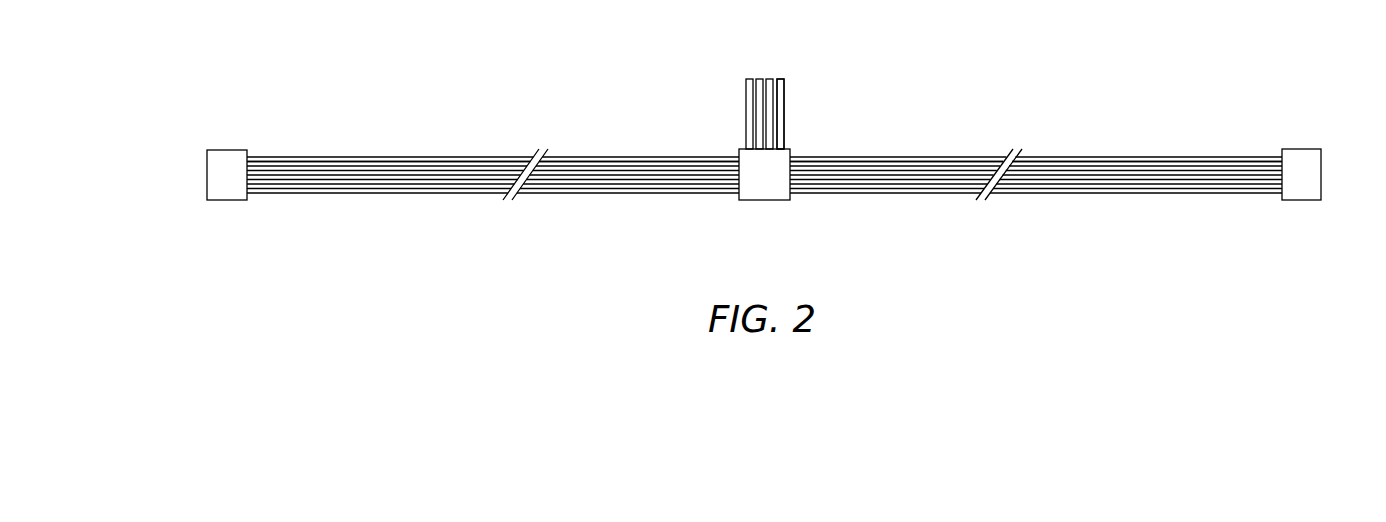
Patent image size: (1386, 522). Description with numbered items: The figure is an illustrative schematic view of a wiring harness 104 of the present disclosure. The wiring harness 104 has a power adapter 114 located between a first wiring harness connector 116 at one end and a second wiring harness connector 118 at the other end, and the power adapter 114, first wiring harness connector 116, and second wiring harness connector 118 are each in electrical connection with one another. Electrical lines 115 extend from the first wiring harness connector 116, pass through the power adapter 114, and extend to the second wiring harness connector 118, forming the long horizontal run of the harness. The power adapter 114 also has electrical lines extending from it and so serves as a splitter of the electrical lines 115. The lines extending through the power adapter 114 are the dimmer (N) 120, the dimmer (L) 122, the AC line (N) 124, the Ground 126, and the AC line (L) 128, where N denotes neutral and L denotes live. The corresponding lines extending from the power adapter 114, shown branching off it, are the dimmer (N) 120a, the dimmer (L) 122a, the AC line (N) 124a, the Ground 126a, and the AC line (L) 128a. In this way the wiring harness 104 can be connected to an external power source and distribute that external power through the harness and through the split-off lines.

The wiring harness 104 is at (1122, 187).
The power adapter 114 is at (780, 200).
The electrical lines 115 is at (558, 187).
The first wiring harness connector 116 is at (1297, 149).
The second wiring harness connector 118 is at (230, 150).
The dimmer (N) 120 is at (433, 193).
The dimmer (L) 122 is at (357, 187).
The AC line (N) 124 is at (462, 170).
The Ground 126 is at (412, 163).
The AC line (L) 128 is at (378, 157).
The dimmer (N) 120a is at (785, 140).
The dimmer (L) 122a is at (775, 118).
The AC line (N) 124a is at (768, 90).
The Ground 126a is at (752, 95).
The AC line (L) 128a is at (746, 107).